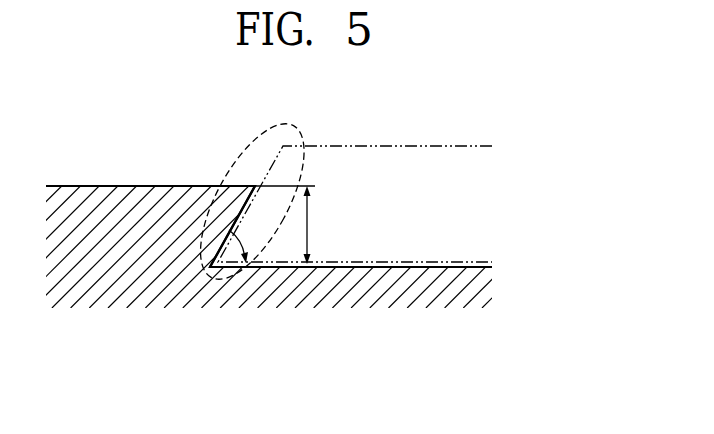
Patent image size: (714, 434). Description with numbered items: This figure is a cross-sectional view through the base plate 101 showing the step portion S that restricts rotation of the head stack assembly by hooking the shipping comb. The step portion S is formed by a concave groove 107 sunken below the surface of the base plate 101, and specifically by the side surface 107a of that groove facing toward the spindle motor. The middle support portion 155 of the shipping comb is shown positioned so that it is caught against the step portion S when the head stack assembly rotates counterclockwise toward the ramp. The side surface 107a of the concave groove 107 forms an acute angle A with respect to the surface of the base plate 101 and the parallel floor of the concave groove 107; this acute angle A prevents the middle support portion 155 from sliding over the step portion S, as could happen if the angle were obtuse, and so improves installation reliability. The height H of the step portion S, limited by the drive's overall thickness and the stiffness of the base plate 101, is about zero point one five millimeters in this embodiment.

The base plate 101 is at (123, 169).
The concave groove 107 is at (448, 258).
The side surface 107a is at (252, 202).
The middle support portion 155 is at (392, 145).
The height H is at (295, 225).
The acute angle A is at (244, 242).
The step portion S is at (206, 290).